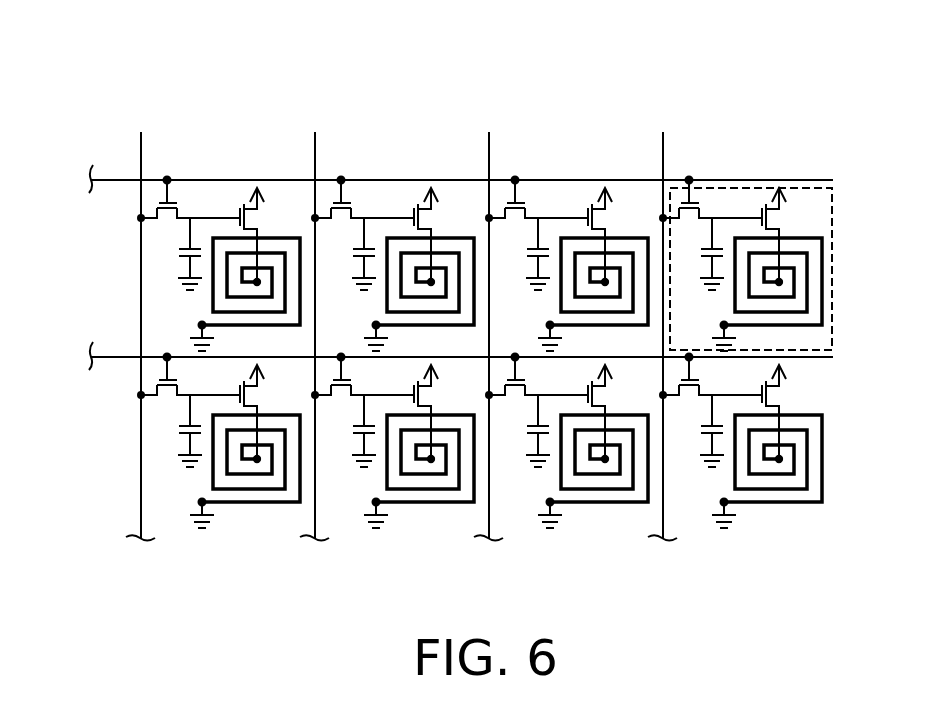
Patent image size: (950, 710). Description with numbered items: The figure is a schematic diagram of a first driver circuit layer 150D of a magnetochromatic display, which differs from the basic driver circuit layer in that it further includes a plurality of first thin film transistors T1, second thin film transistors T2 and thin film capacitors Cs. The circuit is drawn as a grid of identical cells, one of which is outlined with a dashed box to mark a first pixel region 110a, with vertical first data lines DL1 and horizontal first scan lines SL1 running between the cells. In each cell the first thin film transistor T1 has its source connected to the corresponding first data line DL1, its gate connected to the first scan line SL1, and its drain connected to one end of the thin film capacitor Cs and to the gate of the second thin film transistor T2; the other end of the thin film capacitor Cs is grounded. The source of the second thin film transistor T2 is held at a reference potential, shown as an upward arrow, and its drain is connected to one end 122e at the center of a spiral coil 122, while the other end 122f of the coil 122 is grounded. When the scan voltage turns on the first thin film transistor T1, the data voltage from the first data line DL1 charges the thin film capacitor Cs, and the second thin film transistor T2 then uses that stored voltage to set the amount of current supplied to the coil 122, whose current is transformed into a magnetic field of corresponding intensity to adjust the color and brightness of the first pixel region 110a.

The first data line DL1 is at (140, 147).
The first scan line SL1 is at (822, 180).
The first thin film transistor T1 is at (192, 207).
The second thin film transistor T2 is at (262, 232).
The thin film capacitor Cs is at (175, 252).
The coil 122 is at (213, 302).
The end of the coil 122e is at (263, 281).
The other end of the coil 122f is at (183, 327).
The first pixel region 110a is at (832, 319).
The first driver circuit layer 150D is at (920, 553).